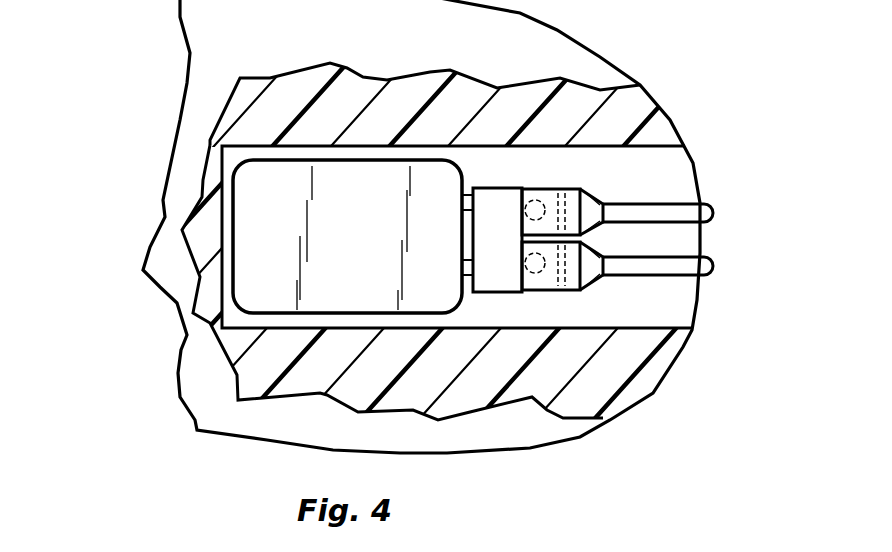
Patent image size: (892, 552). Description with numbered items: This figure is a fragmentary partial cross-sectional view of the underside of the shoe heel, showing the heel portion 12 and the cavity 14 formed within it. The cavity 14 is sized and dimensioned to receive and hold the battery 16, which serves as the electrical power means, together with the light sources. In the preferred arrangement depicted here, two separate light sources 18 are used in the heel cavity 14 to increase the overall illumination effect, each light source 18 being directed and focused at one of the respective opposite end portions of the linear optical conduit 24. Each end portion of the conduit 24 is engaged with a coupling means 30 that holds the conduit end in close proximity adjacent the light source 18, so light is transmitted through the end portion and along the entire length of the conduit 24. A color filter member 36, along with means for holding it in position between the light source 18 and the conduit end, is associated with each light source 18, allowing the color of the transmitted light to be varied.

The heel portion 12 is at (230, 50).
The cavity 14 is at (278, 332).
The battery 16 is at (357, 200).
The light source 18 is at (537, 200).
The linear optical conduit 24 is at (713, 217).
The coupling means 30 is at (598, 198).
The color filter member 36 is at (565, 190).